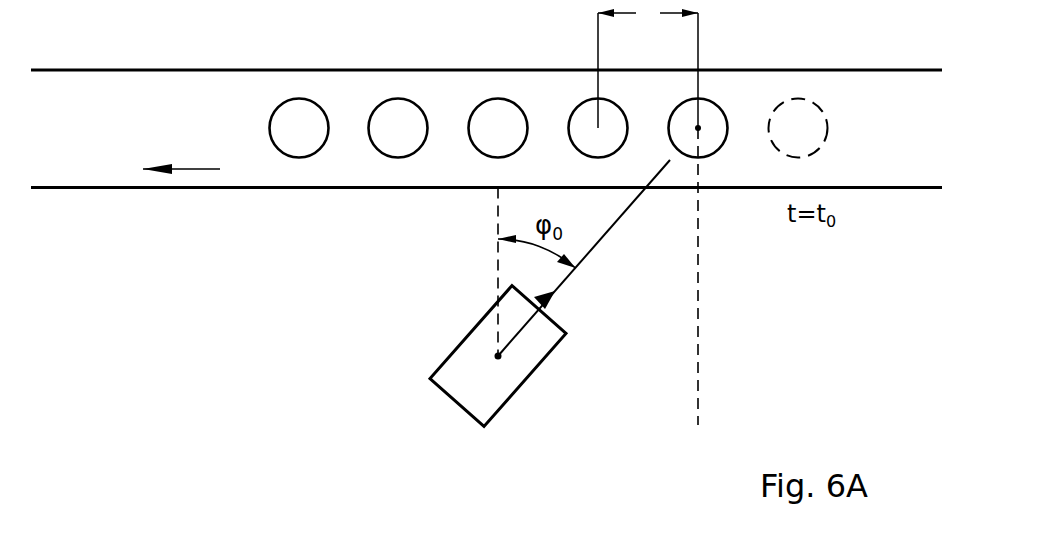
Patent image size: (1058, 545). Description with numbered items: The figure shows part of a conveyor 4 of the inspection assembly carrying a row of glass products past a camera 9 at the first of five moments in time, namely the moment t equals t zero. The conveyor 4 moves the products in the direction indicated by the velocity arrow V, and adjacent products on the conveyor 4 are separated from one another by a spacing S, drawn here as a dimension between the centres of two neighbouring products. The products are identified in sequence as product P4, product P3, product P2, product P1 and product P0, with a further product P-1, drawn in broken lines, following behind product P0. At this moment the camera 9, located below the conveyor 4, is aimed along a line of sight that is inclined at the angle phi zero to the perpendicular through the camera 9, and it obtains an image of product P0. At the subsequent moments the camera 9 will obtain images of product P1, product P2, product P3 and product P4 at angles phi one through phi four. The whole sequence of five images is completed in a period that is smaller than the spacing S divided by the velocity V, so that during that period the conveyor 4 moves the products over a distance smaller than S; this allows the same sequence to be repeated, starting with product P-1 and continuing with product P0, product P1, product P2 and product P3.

The conveyor 4 is at (398, 68).
The camera 9 is at (530, 375).
The velocity of the conveyor V is at (198, 167).
The distance between adjacent products S is at (648, 64).
The product P0 is at (707, 139).
The product P1 is at (607, 139).
The product P2 is at (507, 139).
The product P3 is at (407, 139).
The product P4 is at (308, 139).
The product P-1 is at (809, 139).